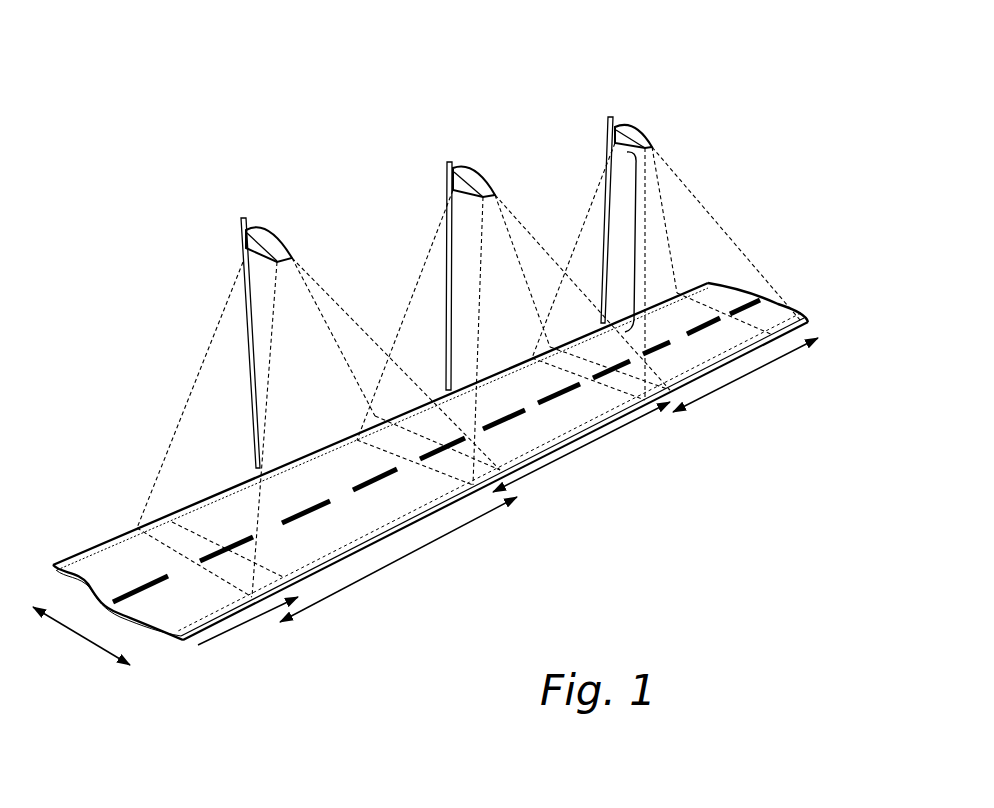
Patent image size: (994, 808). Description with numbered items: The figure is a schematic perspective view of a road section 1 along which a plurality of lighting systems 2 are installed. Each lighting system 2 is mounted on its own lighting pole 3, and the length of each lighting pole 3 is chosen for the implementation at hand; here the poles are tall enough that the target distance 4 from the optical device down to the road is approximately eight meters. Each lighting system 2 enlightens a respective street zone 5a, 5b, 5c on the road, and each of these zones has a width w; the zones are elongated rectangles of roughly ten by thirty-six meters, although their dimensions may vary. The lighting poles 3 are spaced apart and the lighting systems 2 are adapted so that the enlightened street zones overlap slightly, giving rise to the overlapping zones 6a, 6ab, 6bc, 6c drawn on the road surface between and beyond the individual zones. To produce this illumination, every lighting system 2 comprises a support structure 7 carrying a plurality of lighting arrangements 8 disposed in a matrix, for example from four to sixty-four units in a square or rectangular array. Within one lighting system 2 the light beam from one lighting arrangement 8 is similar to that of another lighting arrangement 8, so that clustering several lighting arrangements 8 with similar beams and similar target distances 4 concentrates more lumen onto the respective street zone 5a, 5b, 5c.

The road section 1 is at (645, 440).
The lighting system 2 is at (449, 234).
The lighting pole 3 is at (608, 185).
The target distance 4 is at (640, 243).
The street zone 5a is at (357, 571).
The street zone 5b is at (581, 447).
The street zone 5c is at (745, 377).
The overlapping zone 6a is at (170, 542).
The overlapping zone 6ab is at (388, 440).
The overlapping zone 6bc is at (558, 363).
The overlapping zone 6c is at (713, 308).
The support structure 7 is at (243, 247).
The lighting arrangement 8 is at (263, 238).
The width w is at (81, 639).